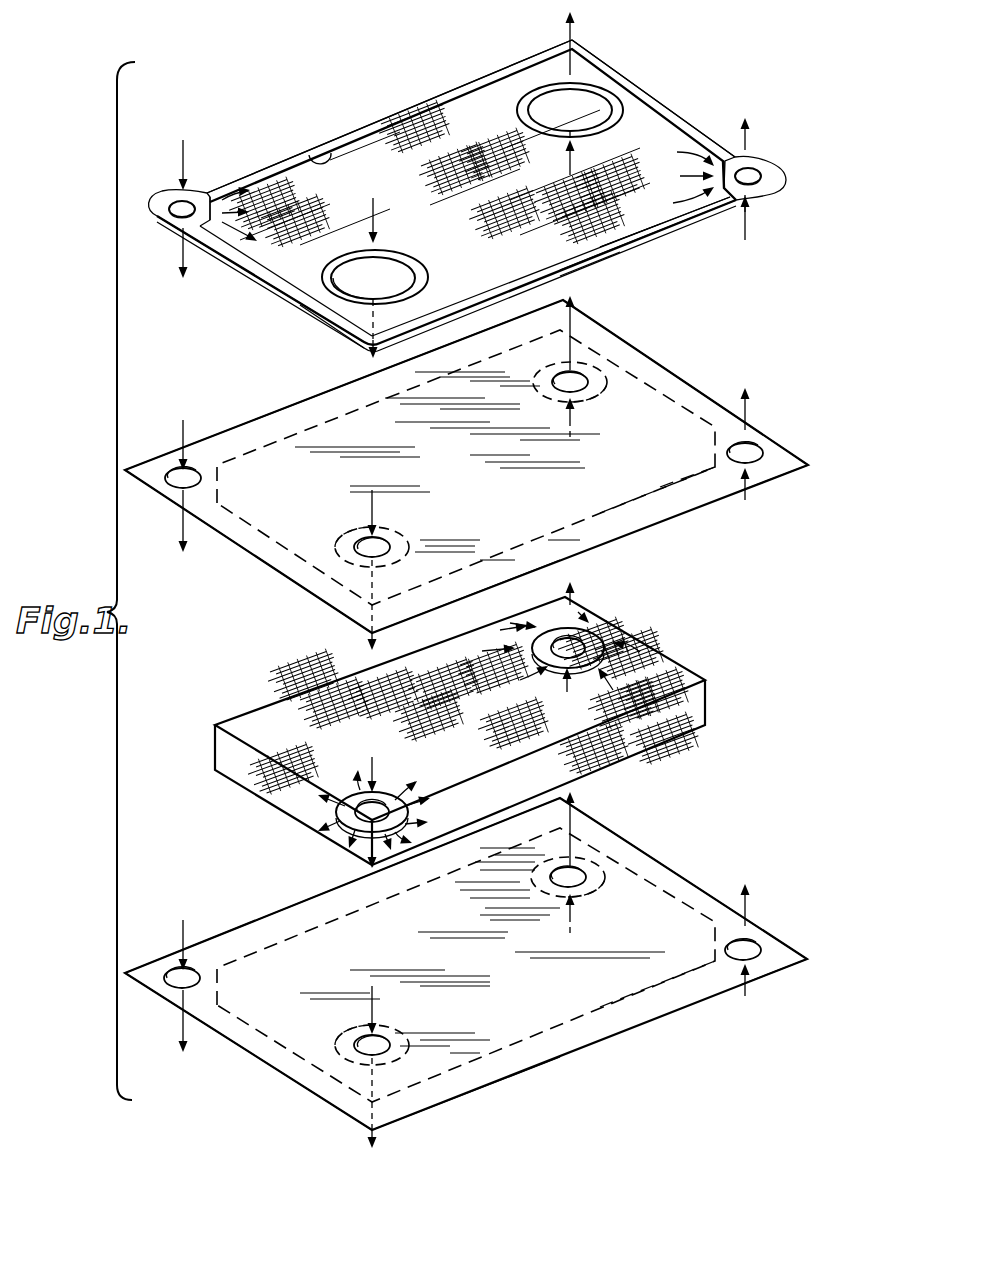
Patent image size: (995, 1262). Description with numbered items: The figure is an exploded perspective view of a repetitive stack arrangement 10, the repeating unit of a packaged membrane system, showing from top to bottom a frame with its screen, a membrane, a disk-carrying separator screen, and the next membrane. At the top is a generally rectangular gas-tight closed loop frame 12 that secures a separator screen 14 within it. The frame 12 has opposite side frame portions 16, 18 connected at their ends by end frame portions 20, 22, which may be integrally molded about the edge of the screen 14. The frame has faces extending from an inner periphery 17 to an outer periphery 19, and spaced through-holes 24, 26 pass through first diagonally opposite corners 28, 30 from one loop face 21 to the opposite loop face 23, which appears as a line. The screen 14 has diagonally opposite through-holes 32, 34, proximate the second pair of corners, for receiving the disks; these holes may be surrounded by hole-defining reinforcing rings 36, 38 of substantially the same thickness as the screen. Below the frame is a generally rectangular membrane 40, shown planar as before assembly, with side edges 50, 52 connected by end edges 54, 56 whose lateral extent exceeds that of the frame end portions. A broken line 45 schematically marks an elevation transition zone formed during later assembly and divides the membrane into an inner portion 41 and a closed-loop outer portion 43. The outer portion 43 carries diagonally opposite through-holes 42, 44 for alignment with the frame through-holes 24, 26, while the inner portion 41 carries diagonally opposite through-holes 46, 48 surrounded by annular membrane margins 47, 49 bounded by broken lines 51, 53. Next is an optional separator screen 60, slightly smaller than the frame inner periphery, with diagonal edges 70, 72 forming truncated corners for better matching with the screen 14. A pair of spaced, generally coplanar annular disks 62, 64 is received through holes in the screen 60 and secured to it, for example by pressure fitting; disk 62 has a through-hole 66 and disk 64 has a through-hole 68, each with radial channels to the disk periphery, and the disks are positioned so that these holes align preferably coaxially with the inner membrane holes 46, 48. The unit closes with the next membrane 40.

The repetitive stack arrangement 10 is at (778, 565).
The closed loop frame 12 is at (716, 228).
The separator screen 14 is at (668, 213).
The side frame portion 16 is at (650, 235).
The frame inner periphery 17 is at (328, 150).
The side frame portion 18 is at (400, 104).
The frame outer periphery 19 is at (312, 317).
The end frame portion 20 is at (245, 282).
The loop face 21 is at (615, 245).
The end frame portion 22 is at (680, 98).
The loop face 23 is at (600, 262).
The frame through-hole 24 is at (180, 218).
The frame through-hole 26 is at (780, 191).
The frame corner 28 is at (197, 191).
The frame corner 30 is at (755, 195).
The screen through-hole 32 is at (305, 306).
The screen through-hole 34 is at (603, 106).
The reinforcing ring 36 is at (330, 278).
The reinforcing ring 38 is at (620, 105).
The membrane 40 is at (690, 518).
The membrane inner portion 41 is at (590, 490).
The membrane outer through-hole 42 is at (197, 472).
The membrane outer portion 43 is at (690, 497).
The membrane outer through-hole 44 is at (757, 448).
The broken line 45 is at (653, 493).
The membrane inner through-hole 46 is at (360, 553).
The annular membrane margin 47 is at (405, 547).
The membrane inner through-hole 48 is at (578, 380).
The annular membrane margin 49 is at (602, 385).
The membrane side edge 50 is at (587, 553).
The broken line 51 is at (410, 523).
The membrane side edge 52 is at (328, 390).
The broken line 53 is at (598, 400).
The membrane end edge 54 is at (260, 560).
The membrane end edge 56 is at (692, 385).
The separator screen 60 is at (690, 735).
The annular disk 62 is at (343, 810).
The annular disk 64 is at (595, 642).
The disk through-hole 66 is at (350, 820).
The disk through-hole 68 is at (580, 643).
The diagonal edge 70 is at (214, 747).
The diagonal edge 72 is at (707, 693).